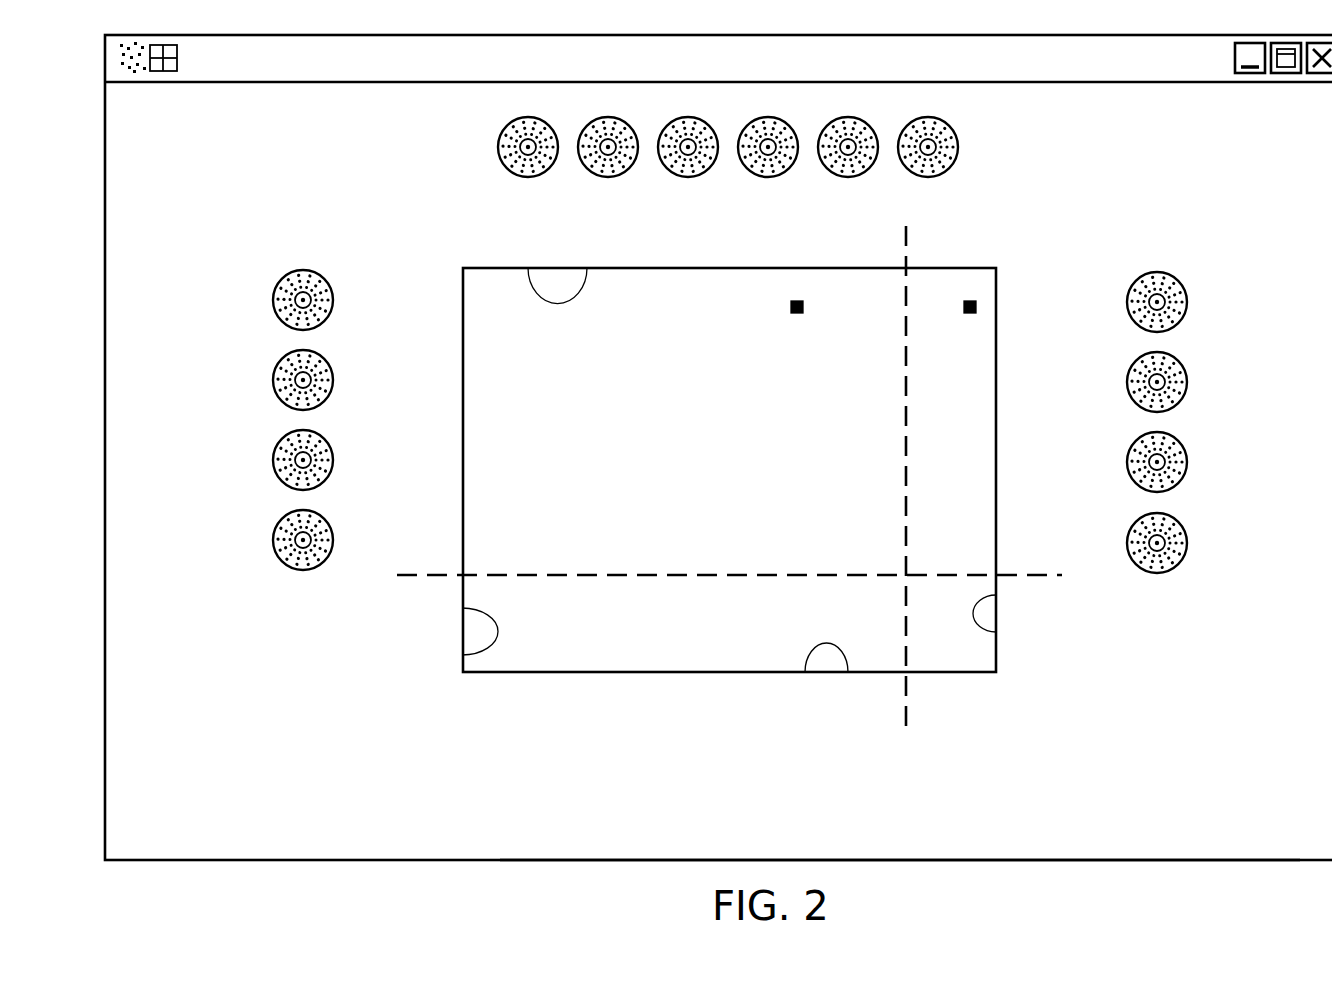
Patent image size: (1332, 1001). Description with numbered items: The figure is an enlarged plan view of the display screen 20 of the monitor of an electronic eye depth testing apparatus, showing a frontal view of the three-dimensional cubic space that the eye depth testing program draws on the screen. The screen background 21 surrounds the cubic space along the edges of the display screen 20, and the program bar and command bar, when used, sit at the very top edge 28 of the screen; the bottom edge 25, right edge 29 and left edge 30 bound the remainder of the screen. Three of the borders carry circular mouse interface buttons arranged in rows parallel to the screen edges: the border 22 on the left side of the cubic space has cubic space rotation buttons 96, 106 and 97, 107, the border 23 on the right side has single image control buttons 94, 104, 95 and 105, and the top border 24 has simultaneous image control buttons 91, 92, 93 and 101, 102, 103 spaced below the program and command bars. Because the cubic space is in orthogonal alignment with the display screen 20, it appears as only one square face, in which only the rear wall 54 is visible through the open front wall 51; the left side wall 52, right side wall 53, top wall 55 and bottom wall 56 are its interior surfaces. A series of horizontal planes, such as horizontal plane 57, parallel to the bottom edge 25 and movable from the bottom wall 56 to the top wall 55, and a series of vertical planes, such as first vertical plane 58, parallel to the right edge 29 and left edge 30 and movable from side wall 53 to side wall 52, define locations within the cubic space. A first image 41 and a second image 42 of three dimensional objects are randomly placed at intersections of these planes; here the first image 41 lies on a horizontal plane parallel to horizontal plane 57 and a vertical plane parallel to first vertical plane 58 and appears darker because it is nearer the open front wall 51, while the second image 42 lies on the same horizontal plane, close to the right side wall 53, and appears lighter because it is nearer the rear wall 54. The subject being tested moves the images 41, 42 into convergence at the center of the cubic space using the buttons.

The display screen 20 is at (729, 470).
The screen background 21 is at (817, 818).
The border 22 is at (404, 429).
The border 23 is at (1051, 436).
The top border 24 is at (732, 225).
The bottom edge 25 is at (1108, 860).
The top edge 28 is at (358, 83).
The right edge 29 is at (1331, 645).
The left edge 30 is at (106, 757).
The first image 41 is at (803, 300).
The second image 42 is at (977, 302).
The open front wall 51 is at (798, 428).
The side wall 52 is at (462, 655).
The side wall 53 is at (996, 631).
The rear wall 54 is at (623, 428).
The top wall 55 is at (531, 268).
The bottom wall 56 is at (847, 672).
The horizontal plane 57 is at (786, 575).
The first vertical plane 58 is at (905, 640).
The simultaneous image control button 91 is at (680, 170).
The simultaneous image control button 92 is at (860, 170).
The simultaneous image control button 93 is at (520, 168).
The single image control button 94 is at (1140, 303).
The single image control button 95 is at (1137, 467).
The cubic space rotation button 96 is at (328, 298).
The cubic space rotation button 97 is at (327, 465).
The simultaneous image control button 101 is at (780, 170).
The simultaneous image control button 102 is at (940, 170).
The simultaneous image control button 103 is at (598, 170).
The single image control button 104 is at (1140, 372).
The single image control button 105 is at (1142, 562).
The cubic space rotation button 106 is at (325, 377).
The cubic space rotation button 107 is at (325, 562).